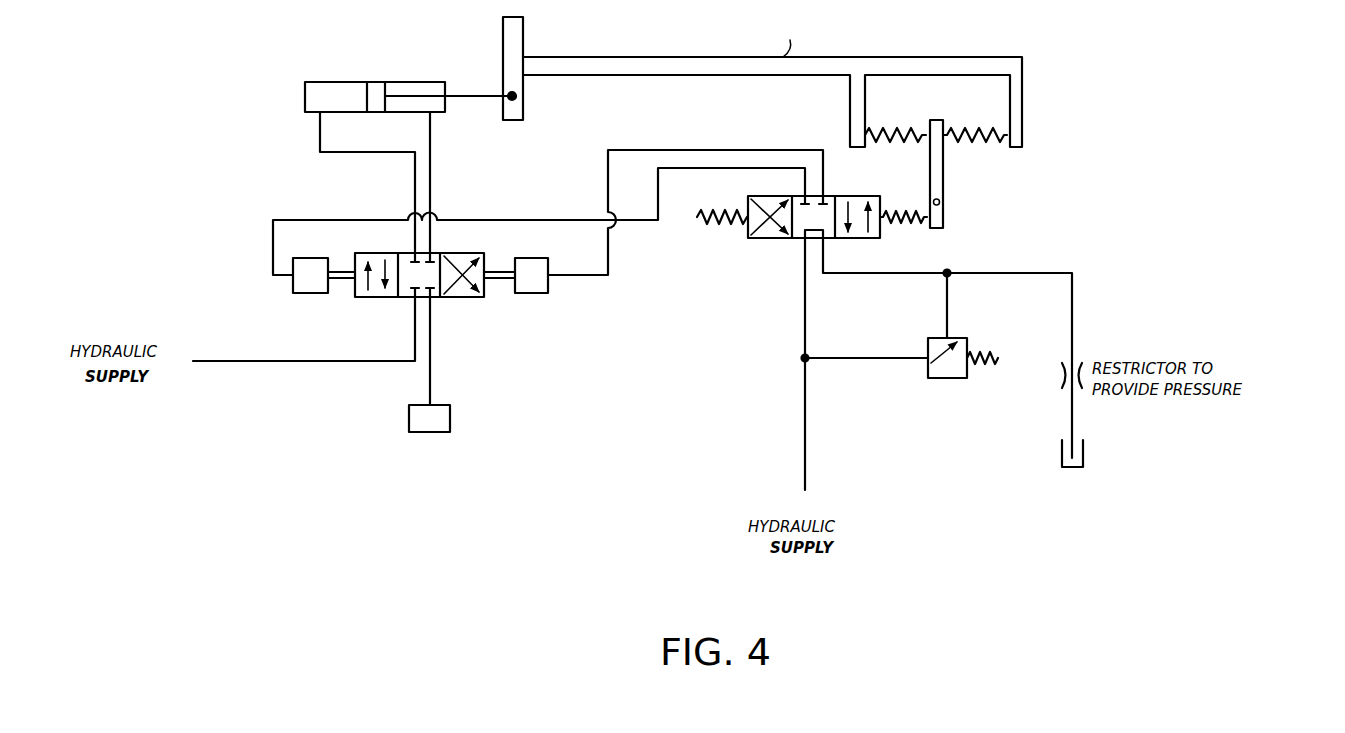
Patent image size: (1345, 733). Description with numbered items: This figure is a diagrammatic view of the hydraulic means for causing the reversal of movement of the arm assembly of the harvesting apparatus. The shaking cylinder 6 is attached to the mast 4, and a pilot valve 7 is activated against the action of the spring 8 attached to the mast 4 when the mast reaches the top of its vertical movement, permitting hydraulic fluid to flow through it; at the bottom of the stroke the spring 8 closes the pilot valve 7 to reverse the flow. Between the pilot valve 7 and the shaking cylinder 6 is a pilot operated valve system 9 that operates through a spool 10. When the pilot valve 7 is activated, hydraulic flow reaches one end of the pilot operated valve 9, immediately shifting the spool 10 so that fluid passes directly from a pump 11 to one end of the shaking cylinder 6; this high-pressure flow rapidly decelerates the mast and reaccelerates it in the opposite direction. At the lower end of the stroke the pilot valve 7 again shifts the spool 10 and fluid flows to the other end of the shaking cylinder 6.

The mast 4 is at (669, 57).
The shaking cylinder 6 is at (305, 92).
The pilot valve 7 is at (922, 238).
The spring 8 is at (985, 142).
The pilot operated valve system 9 is at (350, 313).
The spool 10 is at (455, 297).
The pump 11 is at (415, 432).